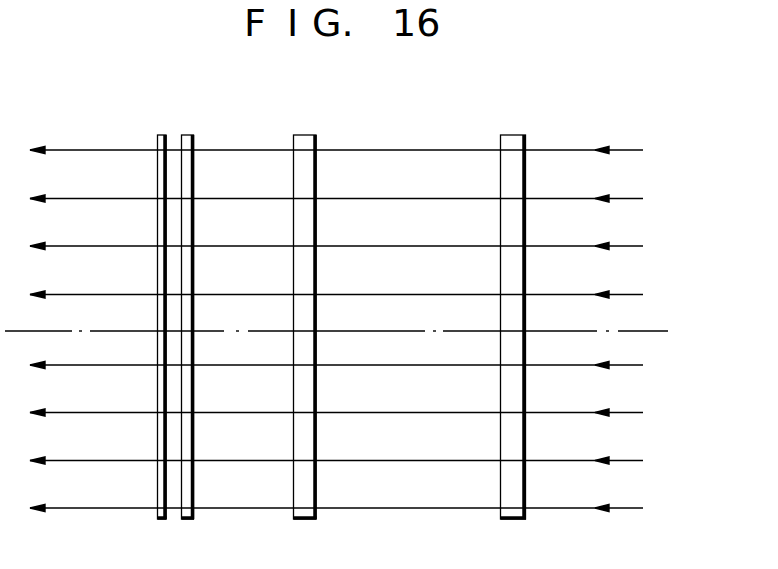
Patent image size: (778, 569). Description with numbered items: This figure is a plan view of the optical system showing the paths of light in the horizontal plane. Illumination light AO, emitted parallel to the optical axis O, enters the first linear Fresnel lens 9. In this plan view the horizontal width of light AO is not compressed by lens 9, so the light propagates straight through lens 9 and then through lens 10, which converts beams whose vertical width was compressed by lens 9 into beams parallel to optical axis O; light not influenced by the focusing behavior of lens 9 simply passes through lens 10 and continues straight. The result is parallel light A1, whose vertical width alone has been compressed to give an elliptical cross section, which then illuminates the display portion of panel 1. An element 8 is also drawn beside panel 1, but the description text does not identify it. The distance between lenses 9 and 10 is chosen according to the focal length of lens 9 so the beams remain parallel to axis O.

The optical element 8 is at (162, 135).
The panel 1 is at (190, 135).
The lens 10 is at (302, 135).
The first linear Fresnel lens 9 is at (512, 135).
The optical axis O is at (645, 331).
The parallel light A1 is at (241, 151).
The illumination light AO is at (624, 151).